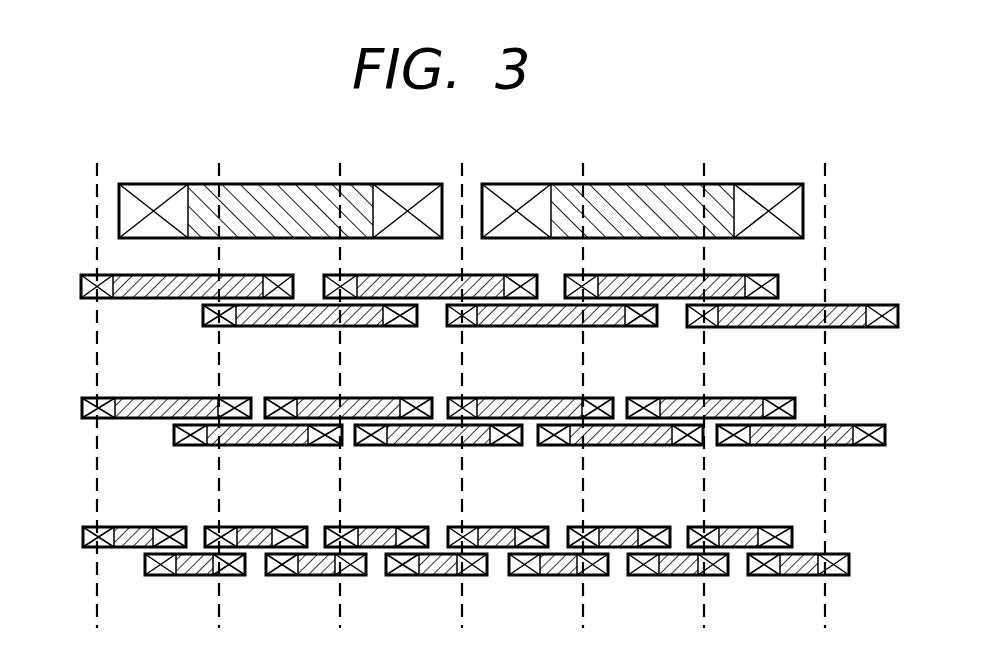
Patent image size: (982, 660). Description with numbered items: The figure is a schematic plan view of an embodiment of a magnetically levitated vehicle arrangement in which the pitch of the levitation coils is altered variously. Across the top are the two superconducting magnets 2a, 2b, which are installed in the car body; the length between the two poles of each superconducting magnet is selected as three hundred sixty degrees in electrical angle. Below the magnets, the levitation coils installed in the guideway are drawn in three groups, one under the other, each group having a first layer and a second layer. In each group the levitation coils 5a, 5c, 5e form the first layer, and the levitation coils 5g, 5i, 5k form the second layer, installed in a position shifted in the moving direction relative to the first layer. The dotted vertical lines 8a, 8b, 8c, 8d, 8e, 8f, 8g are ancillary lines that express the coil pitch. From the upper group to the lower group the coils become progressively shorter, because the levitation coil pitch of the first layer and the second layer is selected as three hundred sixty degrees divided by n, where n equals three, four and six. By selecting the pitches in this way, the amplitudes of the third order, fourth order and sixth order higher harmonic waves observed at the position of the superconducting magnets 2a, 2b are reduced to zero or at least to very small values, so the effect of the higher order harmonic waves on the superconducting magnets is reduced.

The superconducting magnet 2a is at (273, 184).
The superconducting magnet 2b is at (606, 184).
The levitation coil 5a is at (148, 274).
The levitation coil 5c is at (414, 274).
The levitation coil 5e is at (662, 274).
The levitation coil 5g is at (282, 328).
The levitation coil 5i is at (522, 328).
The levitation coil 5k is at (756, 329).
The ancillary line 8a is at (96, 382).
The ancillary line 8b is at (219, 382).
The ancillary line 8c is at (340, 382).
The ancillary line 8d is at (462, 382).
The ancillary line 8e is at (583, 382).
The ancillary line 8f is at (704, 382).
The ancillary line 8g is at (825, 382).